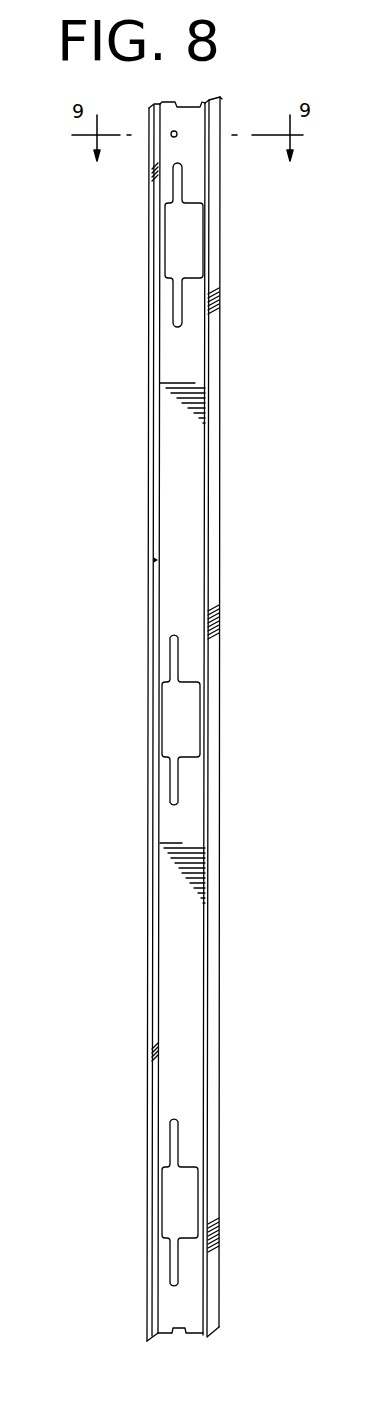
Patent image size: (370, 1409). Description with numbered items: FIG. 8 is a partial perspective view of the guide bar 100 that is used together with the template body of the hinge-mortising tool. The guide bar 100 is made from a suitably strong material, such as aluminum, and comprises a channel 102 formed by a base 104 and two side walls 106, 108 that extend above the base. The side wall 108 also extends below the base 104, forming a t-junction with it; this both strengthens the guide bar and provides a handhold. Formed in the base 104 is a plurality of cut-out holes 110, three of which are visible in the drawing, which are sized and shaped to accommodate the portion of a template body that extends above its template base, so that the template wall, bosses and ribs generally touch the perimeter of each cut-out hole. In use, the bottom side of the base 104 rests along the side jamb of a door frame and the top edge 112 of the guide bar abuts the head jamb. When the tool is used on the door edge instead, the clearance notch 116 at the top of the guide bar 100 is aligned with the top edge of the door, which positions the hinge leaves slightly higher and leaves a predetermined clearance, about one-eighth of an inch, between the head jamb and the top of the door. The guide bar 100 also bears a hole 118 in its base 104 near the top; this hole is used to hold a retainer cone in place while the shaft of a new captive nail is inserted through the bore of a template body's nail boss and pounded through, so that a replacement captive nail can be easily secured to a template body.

The guide bar 100 is at (188, 573).
The channel 102 is at (177, 1020).
The base 104 is at (197, 1087).
The side wall 106 is at (152, 1098).
The side wall 108 is at (212, 1102).
The cut-out holes 110 is at (185, 236).
The top edge 112 is at (165, 101).
The clearance notch 116 is at (186, 101).
The hole 118 is at (171, 137).